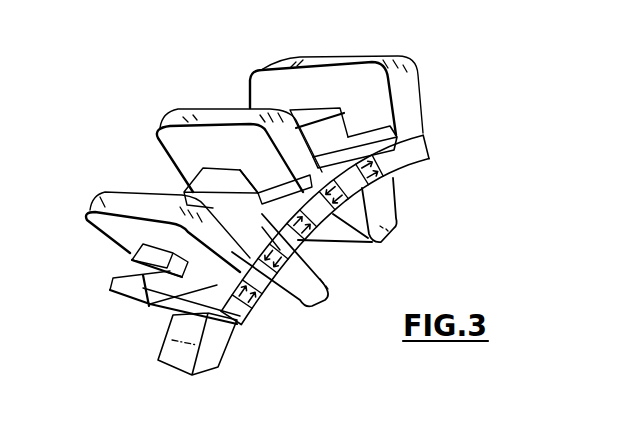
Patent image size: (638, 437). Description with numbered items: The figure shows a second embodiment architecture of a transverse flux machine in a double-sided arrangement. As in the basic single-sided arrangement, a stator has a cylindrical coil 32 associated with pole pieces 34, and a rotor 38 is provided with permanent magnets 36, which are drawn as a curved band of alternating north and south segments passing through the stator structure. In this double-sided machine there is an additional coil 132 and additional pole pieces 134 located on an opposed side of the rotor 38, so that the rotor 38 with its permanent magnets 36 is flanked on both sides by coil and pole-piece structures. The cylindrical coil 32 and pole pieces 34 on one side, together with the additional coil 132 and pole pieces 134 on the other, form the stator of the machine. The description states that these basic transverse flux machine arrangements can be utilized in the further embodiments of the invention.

The pole pieces 34 is at (416, 74).
The cylindrical coil 32 is at (340, 127).
The permanent magnets 36 is at (408, 160).
The pole pieces 134 is at (309, 289).
The coil 132 is at (213, 351).
The rotor 38 is at (157, 315).